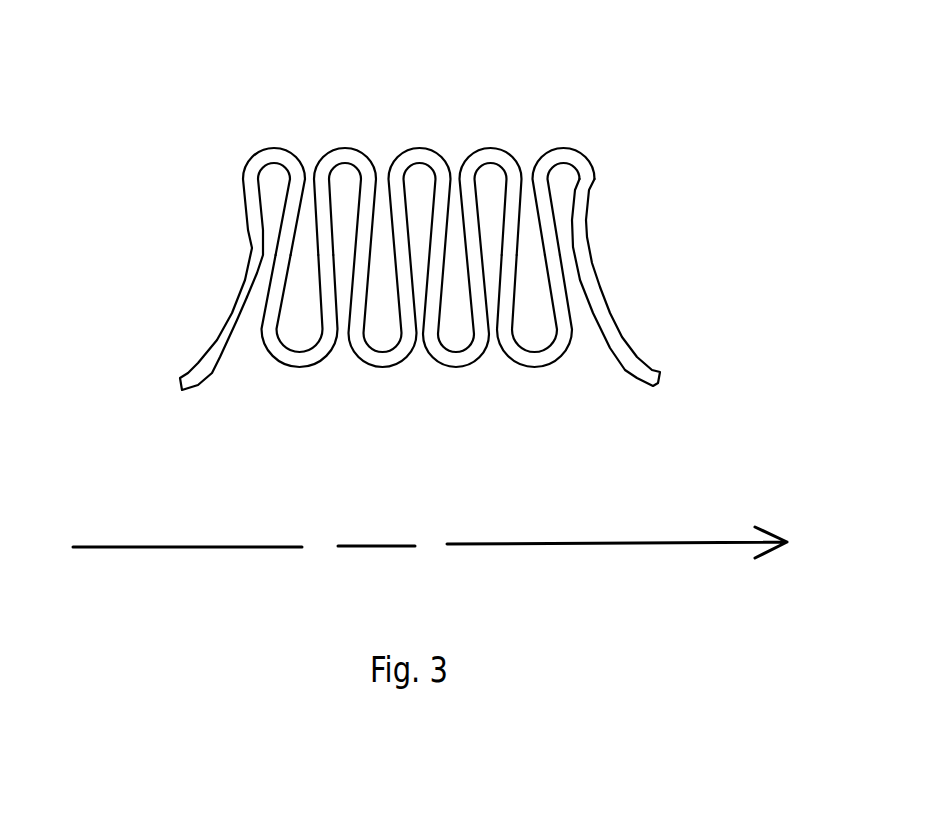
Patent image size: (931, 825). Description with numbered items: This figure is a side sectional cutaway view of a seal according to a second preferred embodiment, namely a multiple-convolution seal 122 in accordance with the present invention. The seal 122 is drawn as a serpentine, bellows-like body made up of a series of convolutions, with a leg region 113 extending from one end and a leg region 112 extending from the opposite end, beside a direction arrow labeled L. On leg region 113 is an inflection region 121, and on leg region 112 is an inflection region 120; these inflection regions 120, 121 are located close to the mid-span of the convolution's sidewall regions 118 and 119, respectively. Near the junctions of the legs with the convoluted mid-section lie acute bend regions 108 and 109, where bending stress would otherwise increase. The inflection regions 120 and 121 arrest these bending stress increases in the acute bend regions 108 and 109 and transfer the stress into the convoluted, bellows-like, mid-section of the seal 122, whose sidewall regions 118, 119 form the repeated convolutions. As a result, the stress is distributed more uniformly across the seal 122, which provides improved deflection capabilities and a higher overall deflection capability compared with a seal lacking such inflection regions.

The multiple-convolution seal 122 is at (173, 125).
The acute bend region 109 is at (282, 150).
The acute bend region 108 is at (564, 148).
The inflection region 121 is at (252, 247).
The leg region 113 is at (229, 314).
The inflection region 120 is at (582, 240).
The leg region 112 is at (608, 315).
The sidewall region 119 is at (285, 253).
The sidewall region 118 is at (556, 273).
The longitudinal direction L is at (838, 557).